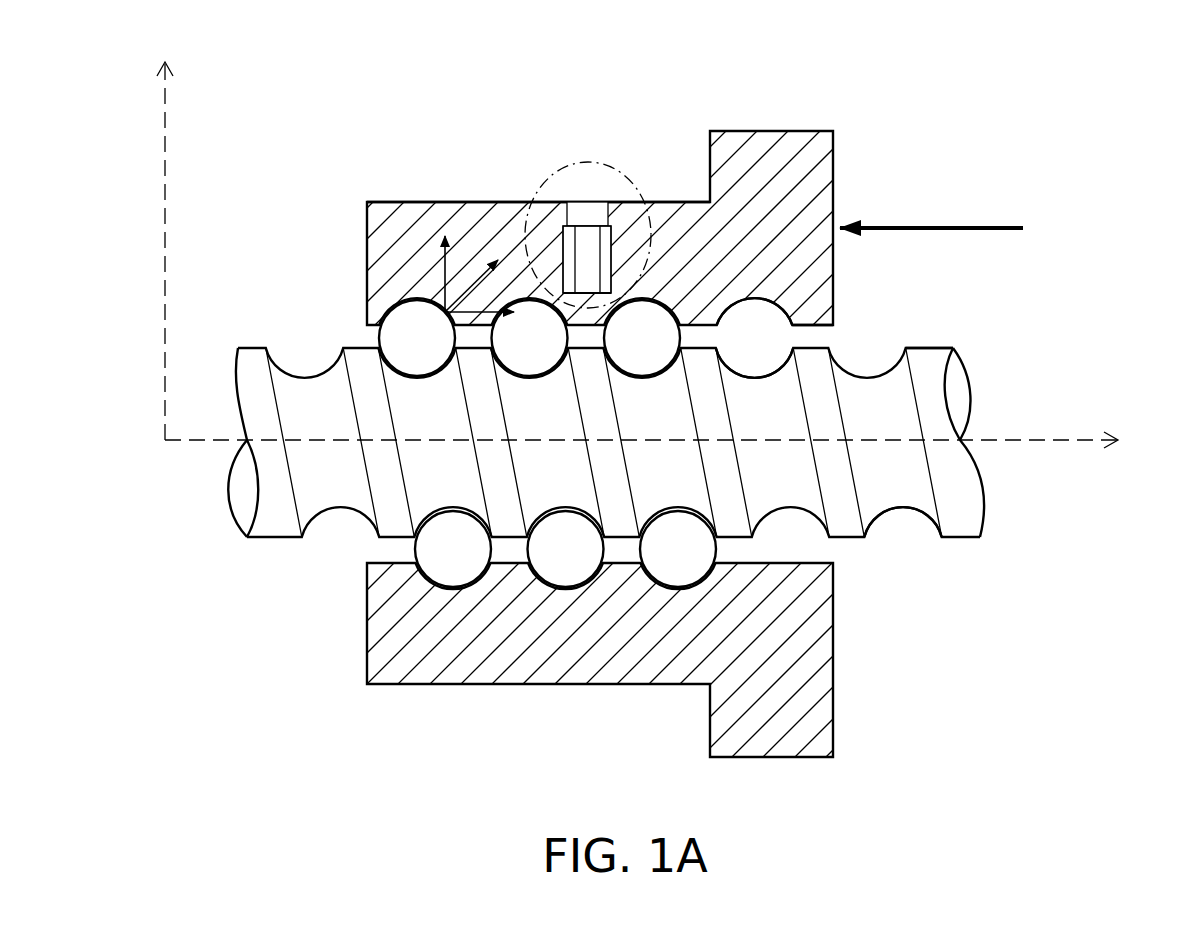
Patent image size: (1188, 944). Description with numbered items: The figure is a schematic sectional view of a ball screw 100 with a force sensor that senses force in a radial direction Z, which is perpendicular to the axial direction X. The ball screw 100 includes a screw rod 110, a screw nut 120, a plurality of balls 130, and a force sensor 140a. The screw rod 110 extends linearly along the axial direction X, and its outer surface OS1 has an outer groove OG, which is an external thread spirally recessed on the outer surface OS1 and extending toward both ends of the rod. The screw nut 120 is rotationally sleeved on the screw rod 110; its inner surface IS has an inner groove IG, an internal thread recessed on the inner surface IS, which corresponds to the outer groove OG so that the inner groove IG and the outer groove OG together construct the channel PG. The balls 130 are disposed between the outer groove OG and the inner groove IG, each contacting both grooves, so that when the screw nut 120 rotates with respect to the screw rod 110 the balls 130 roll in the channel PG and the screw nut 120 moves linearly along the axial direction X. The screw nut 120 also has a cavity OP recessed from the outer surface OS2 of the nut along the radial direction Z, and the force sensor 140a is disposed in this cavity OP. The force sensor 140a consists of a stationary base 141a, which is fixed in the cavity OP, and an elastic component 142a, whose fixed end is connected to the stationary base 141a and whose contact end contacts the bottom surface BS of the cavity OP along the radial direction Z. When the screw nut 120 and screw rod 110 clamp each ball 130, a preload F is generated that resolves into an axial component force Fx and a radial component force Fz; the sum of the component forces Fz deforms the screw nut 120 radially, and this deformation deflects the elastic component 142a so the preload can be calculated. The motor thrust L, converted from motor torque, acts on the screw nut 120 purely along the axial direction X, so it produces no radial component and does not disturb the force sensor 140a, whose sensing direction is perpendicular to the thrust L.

The ball screw with force sensor in radial direction 100 is at (1126, 756).
The screw rod 110 is at (968, 503).
The screw nut 120 is at (834, 178).
The balls 130 is at (677, 560).
The force sensor 140a is at (590, 173).
The stationary base 141a is at (589, 212).
The elastic component 142a is at (570, 290).
The cavity OP is at (607, 245).
The bottom surface BS is at (582, 246).
The outer surface OS1 is at (932, 346).
The outer surface OS2 is at (407, 200).
The inner surface IS is at (820, 327).
The outer groove OG is at (736, 362).
The inner groove IG is at (758, 299).
The channel PG is at (745, 80).
The preload F is at (470, 283).
The component force Fx is at (500, 315).
The component force Fz is at (438, 265).
The motor thrust L is at (940, 228).
The axial direction X is at (655, 442).
The radial direction Z is at (165, 233).